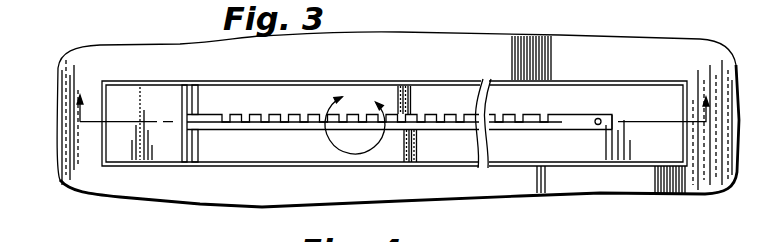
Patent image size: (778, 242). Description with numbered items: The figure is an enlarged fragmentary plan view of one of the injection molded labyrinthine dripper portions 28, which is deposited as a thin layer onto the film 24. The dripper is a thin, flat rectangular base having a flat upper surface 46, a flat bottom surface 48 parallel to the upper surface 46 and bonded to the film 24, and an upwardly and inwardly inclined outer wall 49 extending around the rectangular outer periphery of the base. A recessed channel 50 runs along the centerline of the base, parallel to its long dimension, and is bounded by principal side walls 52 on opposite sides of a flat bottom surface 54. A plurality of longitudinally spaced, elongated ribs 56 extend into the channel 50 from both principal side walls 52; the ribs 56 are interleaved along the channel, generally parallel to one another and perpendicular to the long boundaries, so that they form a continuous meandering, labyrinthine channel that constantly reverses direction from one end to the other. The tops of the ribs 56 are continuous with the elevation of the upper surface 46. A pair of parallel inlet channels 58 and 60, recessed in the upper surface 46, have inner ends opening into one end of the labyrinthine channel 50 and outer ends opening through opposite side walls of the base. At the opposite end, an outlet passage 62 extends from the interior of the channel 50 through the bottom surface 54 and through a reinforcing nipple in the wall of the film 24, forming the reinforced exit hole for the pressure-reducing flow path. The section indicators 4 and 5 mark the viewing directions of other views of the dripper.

The section view indicator 4 is at (355, 122).
The section line 5- 5 is at (394, 99).
The film 24 is at (553, 44).
The labyrinthine dripper portion 28 is at (532, 172).
The upper surface 46 is at (307, 58).
The bottom surface 48 is at (258, 144).
The outer wall 49 is at (410, 166).
The channel 50 is at (418, 123).
The principal side walls 52 is at (418, 123).
The bottom surface of the channel 54 is at (410, 92).
The ribs 56 is at (246, 92).
The inlet channel 58 is at (181, 103).
The inlet channel 60 is at (198, 138).
The outlet passage 62 is at (602, 115).